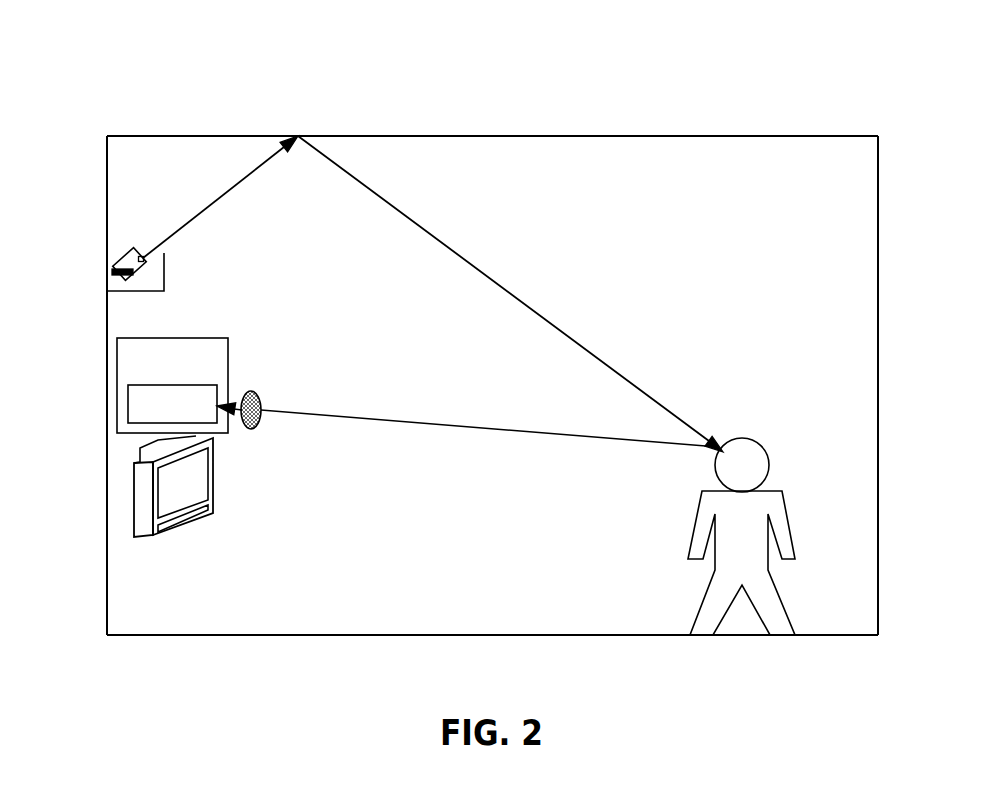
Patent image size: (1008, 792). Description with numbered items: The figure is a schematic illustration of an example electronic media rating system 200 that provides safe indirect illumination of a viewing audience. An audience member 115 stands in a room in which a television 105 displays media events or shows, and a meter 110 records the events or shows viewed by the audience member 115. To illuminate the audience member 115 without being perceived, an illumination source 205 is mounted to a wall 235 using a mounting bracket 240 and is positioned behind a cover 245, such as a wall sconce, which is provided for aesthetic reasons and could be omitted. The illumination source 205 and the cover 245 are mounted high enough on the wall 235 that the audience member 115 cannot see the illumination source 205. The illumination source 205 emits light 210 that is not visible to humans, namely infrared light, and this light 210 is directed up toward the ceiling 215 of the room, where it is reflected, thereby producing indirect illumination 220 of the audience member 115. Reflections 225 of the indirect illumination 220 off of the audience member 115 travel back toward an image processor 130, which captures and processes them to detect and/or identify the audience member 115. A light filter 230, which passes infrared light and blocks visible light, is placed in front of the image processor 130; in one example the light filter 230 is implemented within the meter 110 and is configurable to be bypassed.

The electronic media rating system 200 is at (780, 78).
The television 105 is at (222, 486).
The meter 110 is at (172, 385).
The audience member 115 is at (785, 536).
The image processor 130 is at (172, 404).
The illumination source 205 is at (84, 234).
The light 210 is at (215, 197).
The ceiling 215 is at (492, 159).
The indirect illumination 220 is at (510, 294).
The reflections 225 is at (467, 414).
The light filter 230 is at (294, 386).
The wall 235 is at (61, 385).
The mounting bracket 240 is at (77, 250).
The cover 245 is at (184, 262).